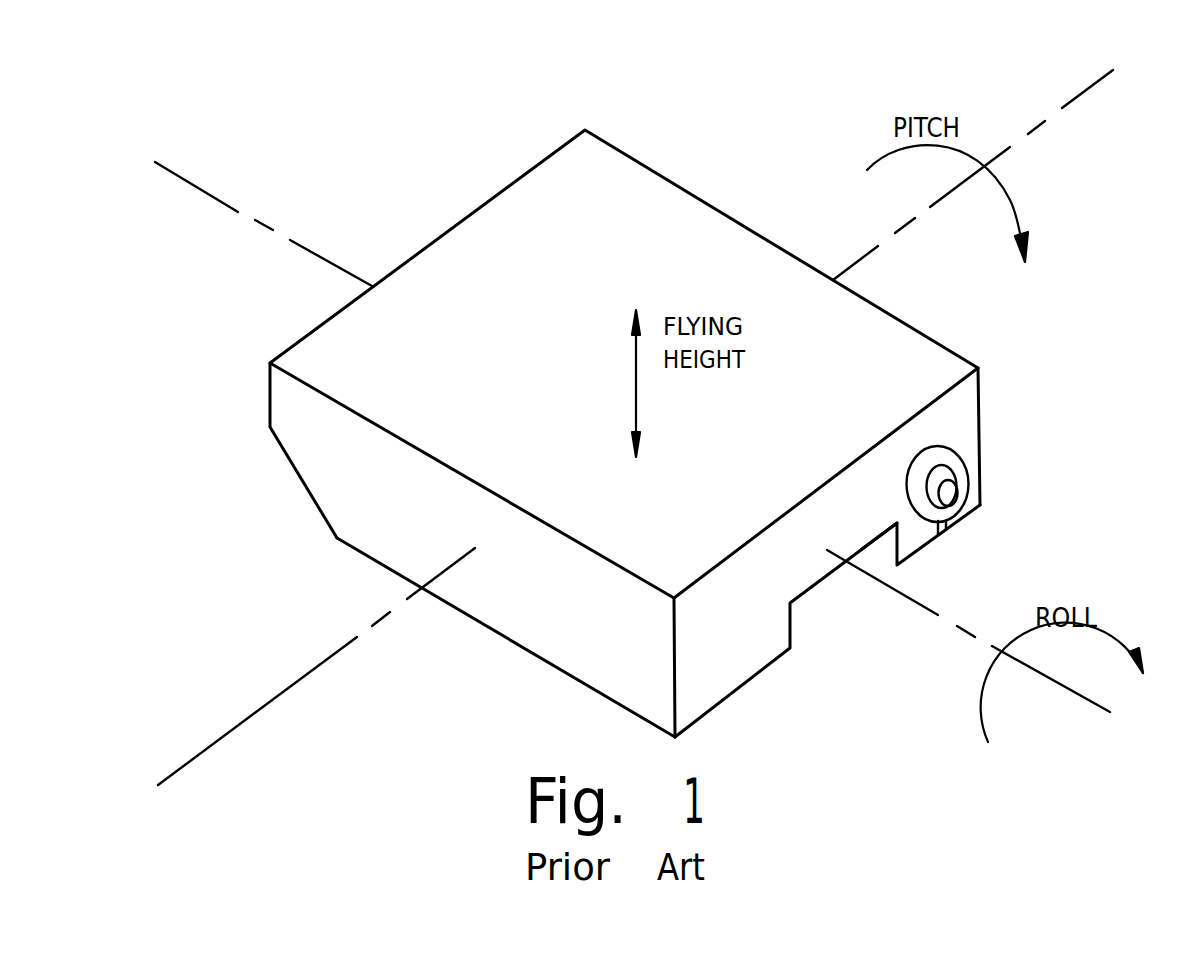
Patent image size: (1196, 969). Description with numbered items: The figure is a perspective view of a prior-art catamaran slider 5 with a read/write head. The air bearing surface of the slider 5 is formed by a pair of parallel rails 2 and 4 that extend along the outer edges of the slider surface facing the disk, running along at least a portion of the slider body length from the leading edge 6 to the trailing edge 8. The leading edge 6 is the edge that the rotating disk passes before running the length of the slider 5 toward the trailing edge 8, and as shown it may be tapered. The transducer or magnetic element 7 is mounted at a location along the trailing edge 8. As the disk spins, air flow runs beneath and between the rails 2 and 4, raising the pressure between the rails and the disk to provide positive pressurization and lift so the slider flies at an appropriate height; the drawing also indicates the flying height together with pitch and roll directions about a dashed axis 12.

The catamaran slider 5 is at (668, 130).
The roll axis 12 is at (195, 182).
The leading edge 6 is at (270, 395).
The trailing edge 8 is at (982, 408).
The transducer or magnetic element 7 is at (968, 475).
The rail 2 is at (937, 538).
The rail 4 is at (743, 685).